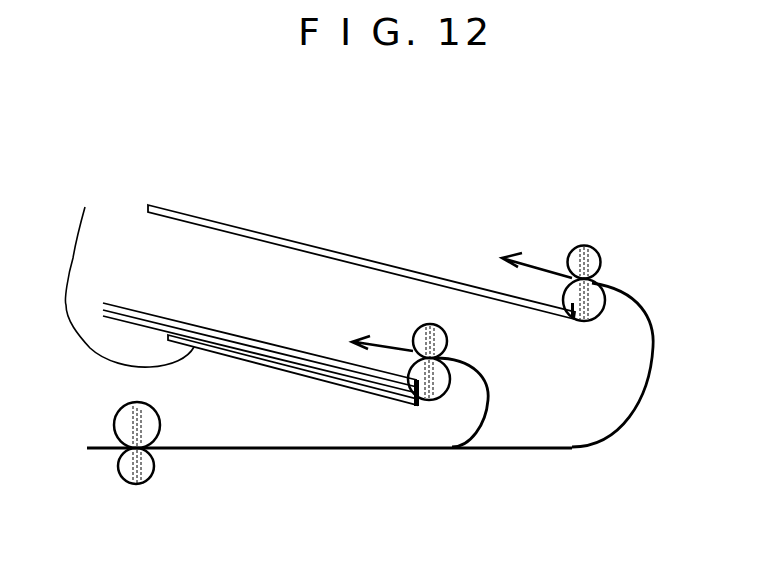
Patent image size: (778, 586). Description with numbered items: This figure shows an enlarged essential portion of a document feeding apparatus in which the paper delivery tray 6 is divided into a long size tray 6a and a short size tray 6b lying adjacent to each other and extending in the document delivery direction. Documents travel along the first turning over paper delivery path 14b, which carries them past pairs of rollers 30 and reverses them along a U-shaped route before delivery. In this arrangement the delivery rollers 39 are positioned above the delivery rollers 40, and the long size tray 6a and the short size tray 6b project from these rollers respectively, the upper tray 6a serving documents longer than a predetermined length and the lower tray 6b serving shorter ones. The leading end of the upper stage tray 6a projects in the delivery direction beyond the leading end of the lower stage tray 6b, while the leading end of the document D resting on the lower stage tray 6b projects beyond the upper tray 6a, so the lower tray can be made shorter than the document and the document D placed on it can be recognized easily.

The paper delivery tray 6 is at (147, 147).
The long size tray 6a is at (197, 216).
The short size tray 6b is at (128, 273).
The document D is at (150, 315).
The delivery rollers 39 is at (596, 240).
The delivery rollers 40 is at (436, 401).
The pairs of rollers 30 is at (128, 483).
The first turning over paper delivery path 14b is at (272, 452).